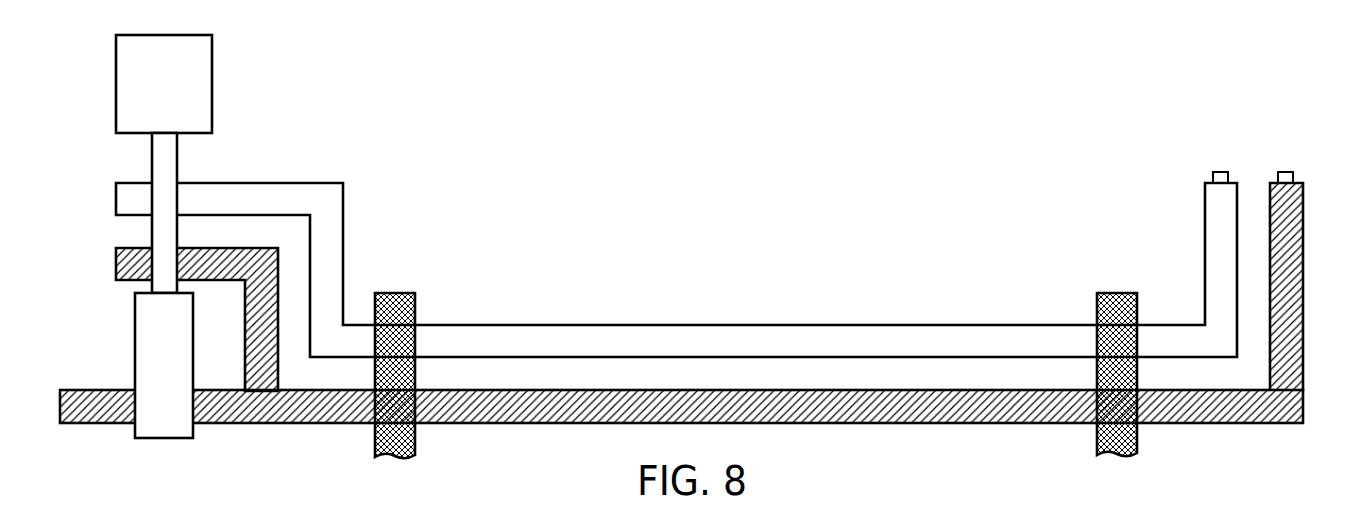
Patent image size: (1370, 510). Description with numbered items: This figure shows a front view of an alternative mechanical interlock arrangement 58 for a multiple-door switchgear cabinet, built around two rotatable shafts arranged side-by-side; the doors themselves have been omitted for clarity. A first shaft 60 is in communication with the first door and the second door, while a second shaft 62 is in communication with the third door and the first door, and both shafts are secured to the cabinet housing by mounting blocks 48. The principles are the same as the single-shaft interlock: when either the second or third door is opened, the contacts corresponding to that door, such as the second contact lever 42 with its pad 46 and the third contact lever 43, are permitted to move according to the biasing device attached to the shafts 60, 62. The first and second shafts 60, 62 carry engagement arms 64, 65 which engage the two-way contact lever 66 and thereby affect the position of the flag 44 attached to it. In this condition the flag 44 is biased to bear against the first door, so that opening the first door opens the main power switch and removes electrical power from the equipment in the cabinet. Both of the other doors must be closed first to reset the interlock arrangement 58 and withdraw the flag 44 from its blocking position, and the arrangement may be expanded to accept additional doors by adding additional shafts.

The second contact lever 42 is at (1210, 206).
The third contact lever 43 is at (1305, 205).
The flag 44 is at (212, 62).
The pad 46 is at (1285, 172).
The mounting blocks 48 is at (400, 293).
The alternative mechanical interlock arrangement 58 is at (774, 141).
The first shaft 60 is at (521, 338).
The second shaft 62 is at (508, 423).
The engagement arm 64 is at (343, 203).
The engagement arm 65 is at (116, 272).
The two-way contact lever 66 is at (178, 153).